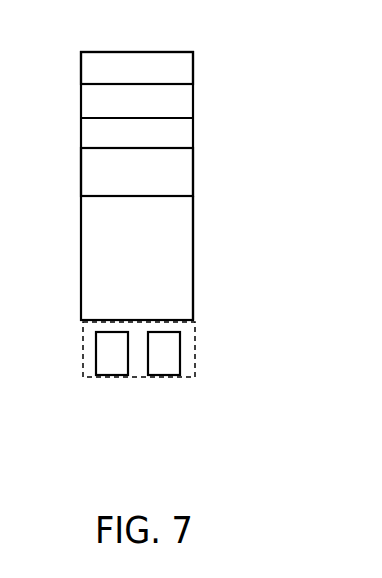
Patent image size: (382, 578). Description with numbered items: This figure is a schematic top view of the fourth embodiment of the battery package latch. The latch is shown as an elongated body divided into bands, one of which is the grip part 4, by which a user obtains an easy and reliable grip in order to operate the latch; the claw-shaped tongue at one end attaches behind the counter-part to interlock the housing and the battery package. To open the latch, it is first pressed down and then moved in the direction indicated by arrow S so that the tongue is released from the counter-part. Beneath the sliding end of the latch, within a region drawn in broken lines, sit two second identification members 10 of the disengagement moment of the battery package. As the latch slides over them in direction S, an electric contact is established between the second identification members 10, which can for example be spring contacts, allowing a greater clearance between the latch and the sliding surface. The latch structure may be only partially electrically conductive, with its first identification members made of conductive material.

The grip part 4 is at (112, 179).
The second identification members of the disengagement moment of the battery package 10 is at (165, 355).
The direction of movement of the latch S is at (216, 285).